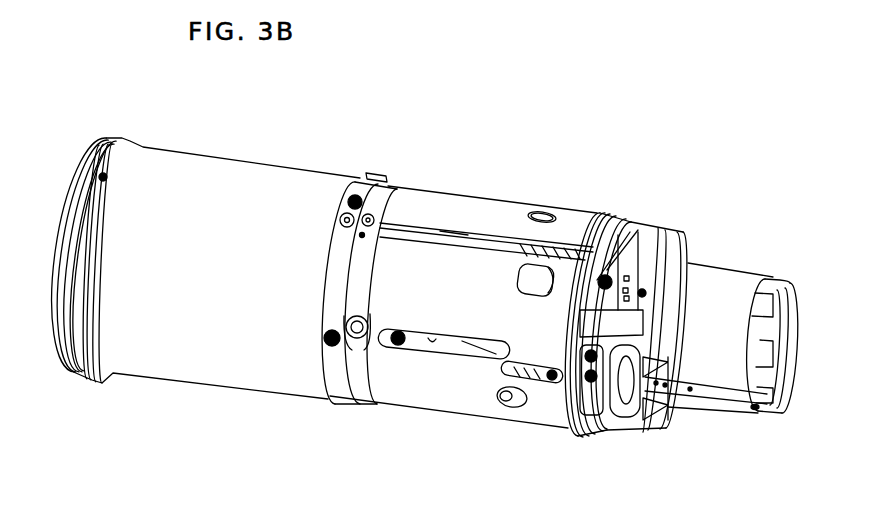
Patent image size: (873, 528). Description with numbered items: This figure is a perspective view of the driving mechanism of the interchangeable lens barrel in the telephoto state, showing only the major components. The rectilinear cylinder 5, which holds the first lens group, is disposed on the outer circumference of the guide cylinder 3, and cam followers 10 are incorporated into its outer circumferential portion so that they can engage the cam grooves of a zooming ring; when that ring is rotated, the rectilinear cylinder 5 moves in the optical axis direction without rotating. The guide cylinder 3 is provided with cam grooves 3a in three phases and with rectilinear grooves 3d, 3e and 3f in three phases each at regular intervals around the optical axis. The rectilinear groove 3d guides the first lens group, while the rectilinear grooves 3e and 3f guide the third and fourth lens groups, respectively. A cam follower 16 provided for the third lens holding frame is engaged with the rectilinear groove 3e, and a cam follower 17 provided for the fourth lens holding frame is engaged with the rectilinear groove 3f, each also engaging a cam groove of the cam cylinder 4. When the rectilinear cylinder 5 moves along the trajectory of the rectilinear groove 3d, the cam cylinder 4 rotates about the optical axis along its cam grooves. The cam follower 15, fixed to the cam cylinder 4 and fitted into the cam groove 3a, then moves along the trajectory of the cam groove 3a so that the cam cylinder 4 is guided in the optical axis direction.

The guide cylinder 3 is at (502, 225).
The cam groove 3a is at (650, 247).
The rectilinear groove 3d is at (402, 225).
The rectilinear groove 3e is at (432, 338).
The rectilinear groove 3f is at (519, 406).
The cam cylinder 4 is at (447, 237).
The rectilinear cylinder 5 is at (225, 182).
The cam follower 10 is at (325, 346).
The cam follower 15 is at (608, 217).
The cam follower 16 is at (395, 346).
The cam follower 17 is at (555, 384).